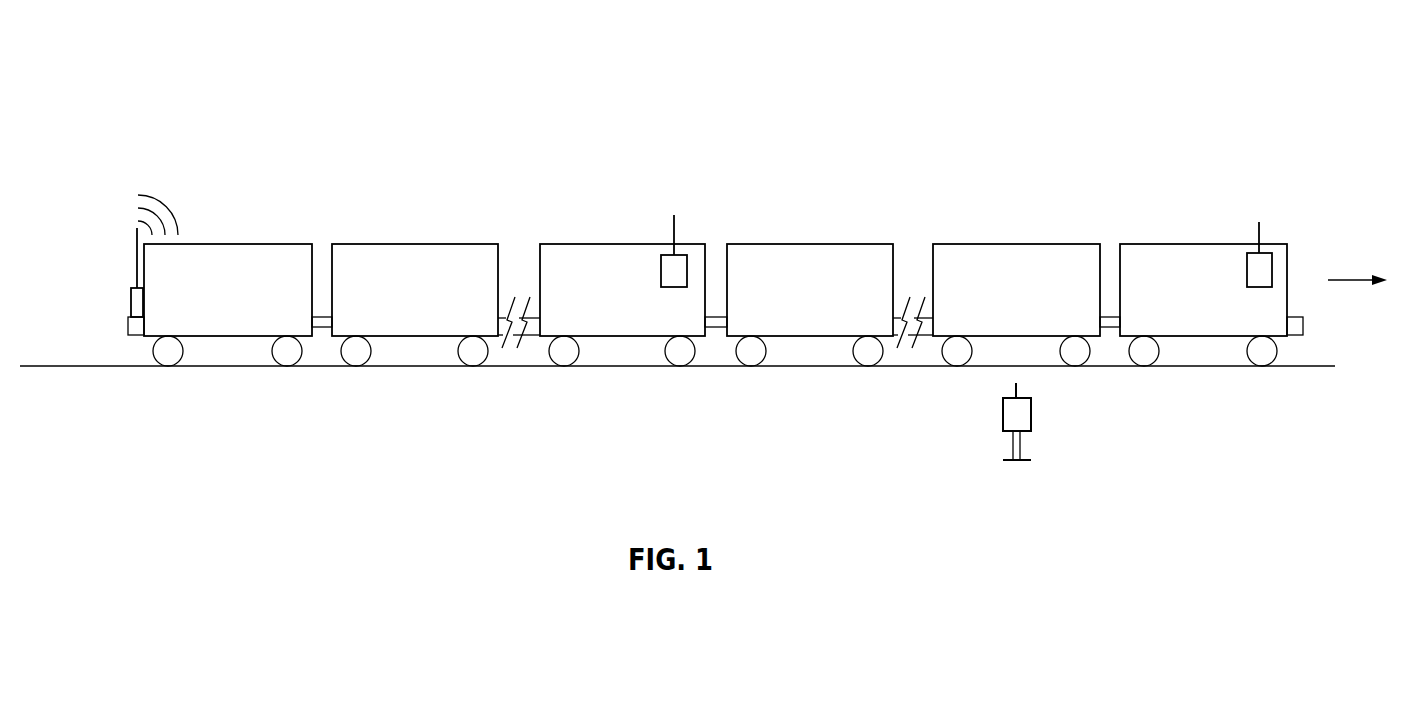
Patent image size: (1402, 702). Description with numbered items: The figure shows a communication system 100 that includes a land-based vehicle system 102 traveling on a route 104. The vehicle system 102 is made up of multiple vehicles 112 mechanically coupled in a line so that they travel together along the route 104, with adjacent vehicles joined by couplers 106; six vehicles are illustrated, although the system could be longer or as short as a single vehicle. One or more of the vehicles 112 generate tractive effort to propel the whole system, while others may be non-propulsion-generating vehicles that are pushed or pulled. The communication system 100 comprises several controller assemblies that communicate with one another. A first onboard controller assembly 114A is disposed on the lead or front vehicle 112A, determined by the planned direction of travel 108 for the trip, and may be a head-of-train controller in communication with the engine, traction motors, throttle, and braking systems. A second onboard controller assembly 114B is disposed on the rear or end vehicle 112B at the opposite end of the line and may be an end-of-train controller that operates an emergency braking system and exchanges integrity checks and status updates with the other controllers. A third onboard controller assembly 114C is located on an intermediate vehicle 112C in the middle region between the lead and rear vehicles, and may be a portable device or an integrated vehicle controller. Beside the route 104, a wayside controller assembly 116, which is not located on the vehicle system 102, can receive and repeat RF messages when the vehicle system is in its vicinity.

The communication system 100 is at (1241, 439).
The vehicle system 102 is at (447, 99).
The route 104 is at (800, 368).
The couplers 106 is at (321, 328).
The planned direction of travel 108 is at (1350, 278).
The vehicles 112 is at (413, 243).
The lead vehicle 112A is at (1203, 243).
The rear vehicle 112B is at (227, 243).
The intermediate vehicle 112C is at (622, 243).
The first onboard controller assembly 114A is at (1273, 275).
The second onboard controller assembly 114B is at (128, 303).
The third onboard controller assembly 114C is at (677, 230).
The wayside controller assembly 116 is at (1003, 413).